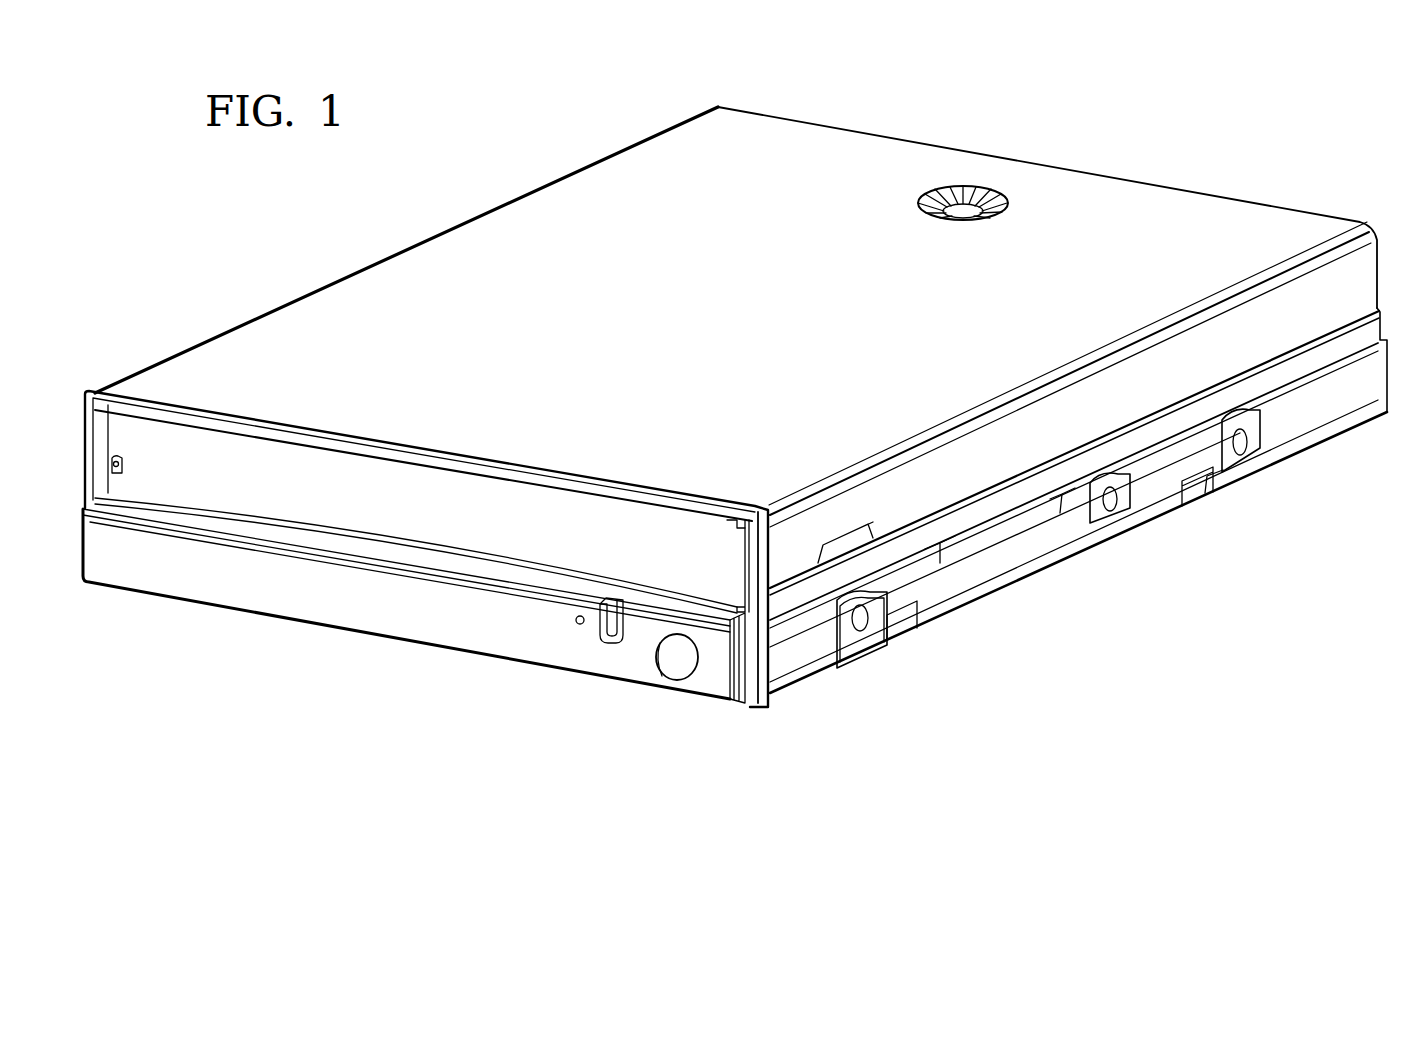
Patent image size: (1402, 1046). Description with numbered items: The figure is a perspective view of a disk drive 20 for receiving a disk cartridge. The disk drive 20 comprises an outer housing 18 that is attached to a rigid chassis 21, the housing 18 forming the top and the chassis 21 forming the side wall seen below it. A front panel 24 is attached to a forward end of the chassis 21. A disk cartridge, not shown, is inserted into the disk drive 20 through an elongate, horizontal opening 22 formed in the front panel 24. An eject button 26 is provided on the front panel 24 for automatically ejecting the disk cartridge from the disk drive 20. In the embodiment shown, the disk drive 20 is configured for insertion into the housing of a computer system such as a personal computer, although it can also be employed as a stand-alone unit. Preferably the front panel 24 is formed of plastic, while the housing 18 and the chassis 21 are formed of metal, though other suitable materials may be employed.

The outer housing 18 is at (627, 200).
The disk drive 20 is at (265, 257).
The chassis 21 is at (972, 517).
The opening 22 is at (262, 485).
The front panel 24 is at (333, 593).
The eject button 26 is at (677, 654).